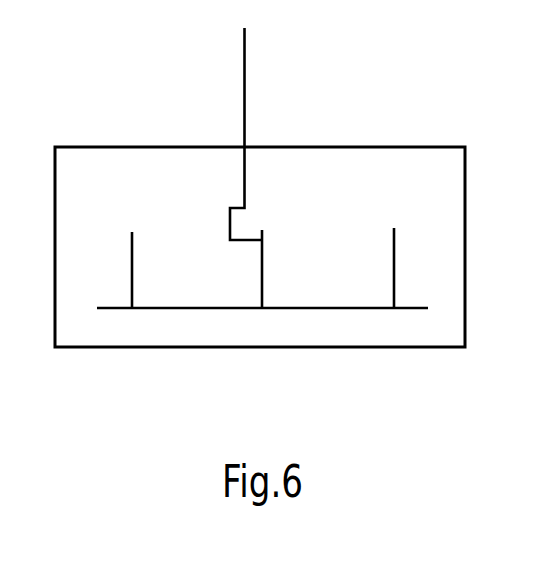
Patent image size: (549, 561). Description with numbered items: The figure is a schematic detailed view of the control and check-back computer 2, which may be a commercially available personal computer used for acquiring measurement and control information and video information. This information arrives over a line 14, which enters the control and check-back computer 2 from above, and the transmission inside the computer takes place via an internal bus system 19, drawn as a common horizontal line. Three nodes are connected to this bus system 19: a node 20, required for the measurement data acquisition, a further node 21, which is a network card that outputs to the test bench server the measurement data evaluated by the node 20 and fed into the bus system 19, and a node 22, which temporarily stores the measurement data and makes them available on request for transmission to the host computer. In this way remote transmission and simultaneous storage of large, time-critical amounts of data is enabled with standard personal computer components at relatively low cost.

The control and check-back computer 2 is at (357, 165).
The line 14 is at (244, 72).
The internal bus system 19 is at (340, 308).
The node 20 is at (394, 255).
The node 21 is at (264, 256).
The node 22 is at (132, 258).